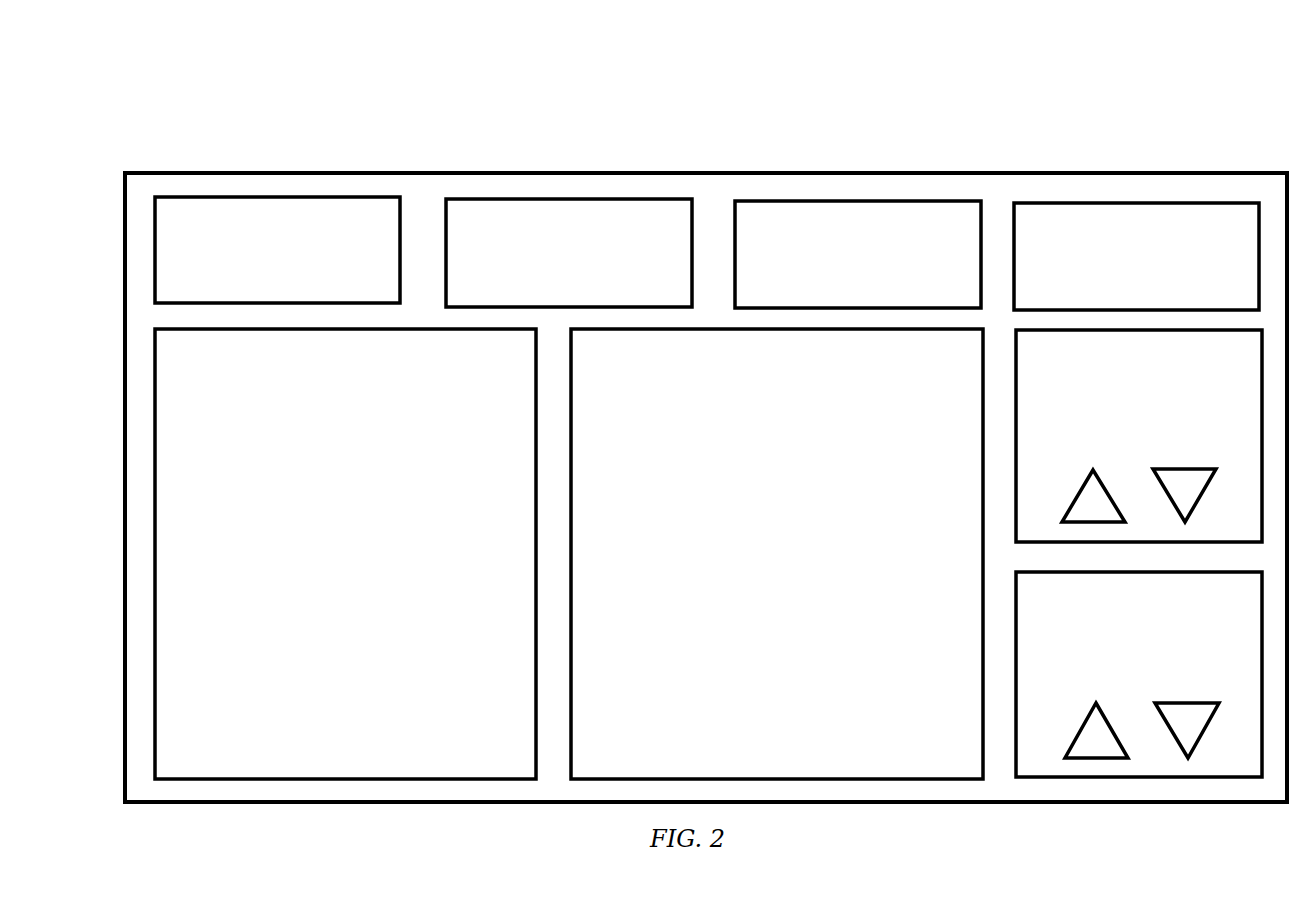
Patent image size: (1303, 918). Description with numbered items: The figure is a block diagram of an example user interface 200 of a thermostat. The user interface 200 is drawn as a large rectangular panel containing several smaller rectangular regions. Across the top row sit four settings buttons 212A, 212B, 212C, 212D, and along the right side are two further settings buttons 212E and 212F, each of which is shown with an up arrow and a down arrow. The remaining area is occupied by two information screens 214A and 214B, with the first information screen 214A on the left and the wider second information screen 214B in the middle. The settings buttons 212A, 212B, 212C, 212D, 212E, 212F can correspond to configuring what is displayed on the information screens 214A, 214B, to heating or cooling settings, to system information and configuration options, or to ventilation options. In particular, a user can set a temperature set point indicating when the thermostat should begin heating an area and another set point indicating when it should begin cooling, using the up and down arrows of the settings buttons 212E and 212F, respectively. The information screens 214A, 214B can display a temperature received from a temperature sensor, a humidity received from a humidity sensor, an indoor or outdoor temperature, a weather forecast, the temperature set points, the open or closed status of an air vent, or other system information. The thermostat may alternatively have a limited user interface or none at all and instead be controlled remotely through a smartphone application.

The user interface 200 is at (192, 95).
The settings button 212A is at (360, 247).
The settings button 212B is at (653, 250).
The settings button 212C is at (917, 252).
The settings button 212D is at (1205, 248).
The settings button 212E is at (1207, 449).
The settings button 212F is at (1195, 676).
The information screen 214A is at (423, 545).
The information screen 214B is at (800, 650).